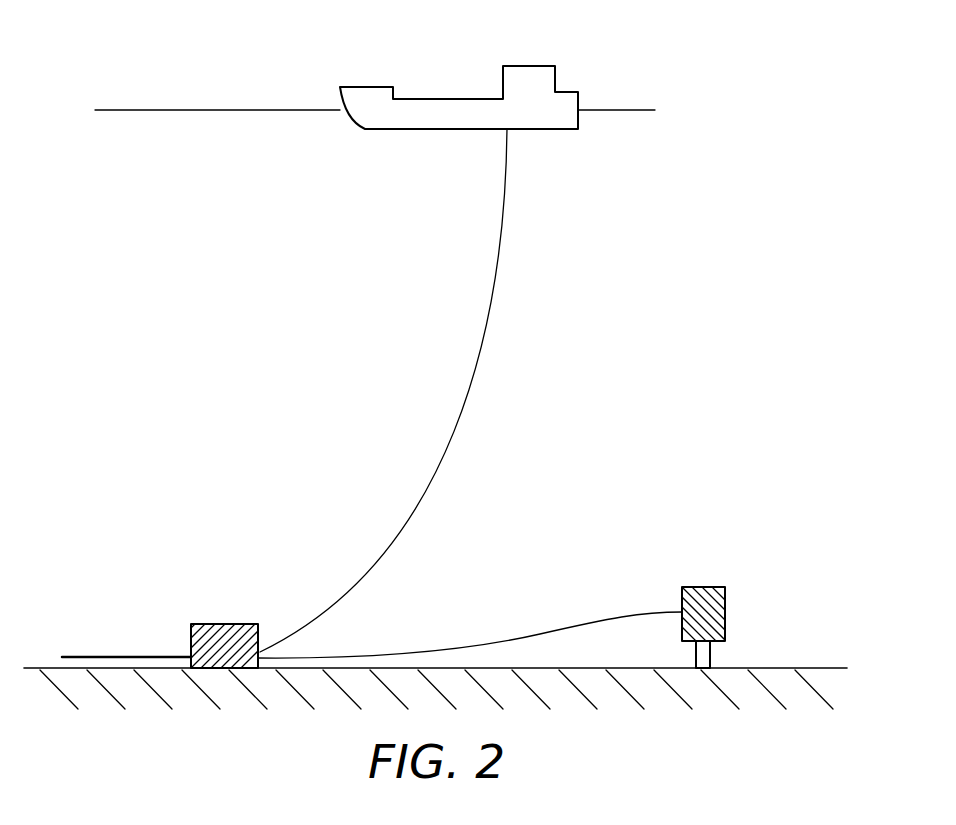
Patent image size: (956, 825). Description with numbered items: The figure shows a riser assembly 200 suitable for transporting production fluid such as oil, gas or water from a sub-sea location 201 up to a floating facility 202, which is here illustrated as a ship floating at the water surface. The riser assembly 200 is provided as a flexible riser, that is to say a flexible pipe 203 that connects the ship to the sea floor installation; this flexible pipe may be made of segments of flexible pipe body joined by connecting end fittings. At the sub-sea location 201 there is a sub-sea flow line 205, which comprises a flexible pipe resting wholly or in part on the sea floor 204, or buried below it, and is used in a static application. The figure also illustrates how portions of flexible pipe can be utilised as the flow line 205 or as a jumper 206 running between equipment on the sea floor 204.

The riser assembly 200 is at (600, 256).
The sub-sea location 201 is at (222, 624).
The floating facility 202 is at (366, 87).
The flexible pipe 203 is at (428, 467).
The sea floor 204 is at (790, 668).
The sub-sea flow line 205 is at (110, 657).
The jumper 206 is at (628, 612).